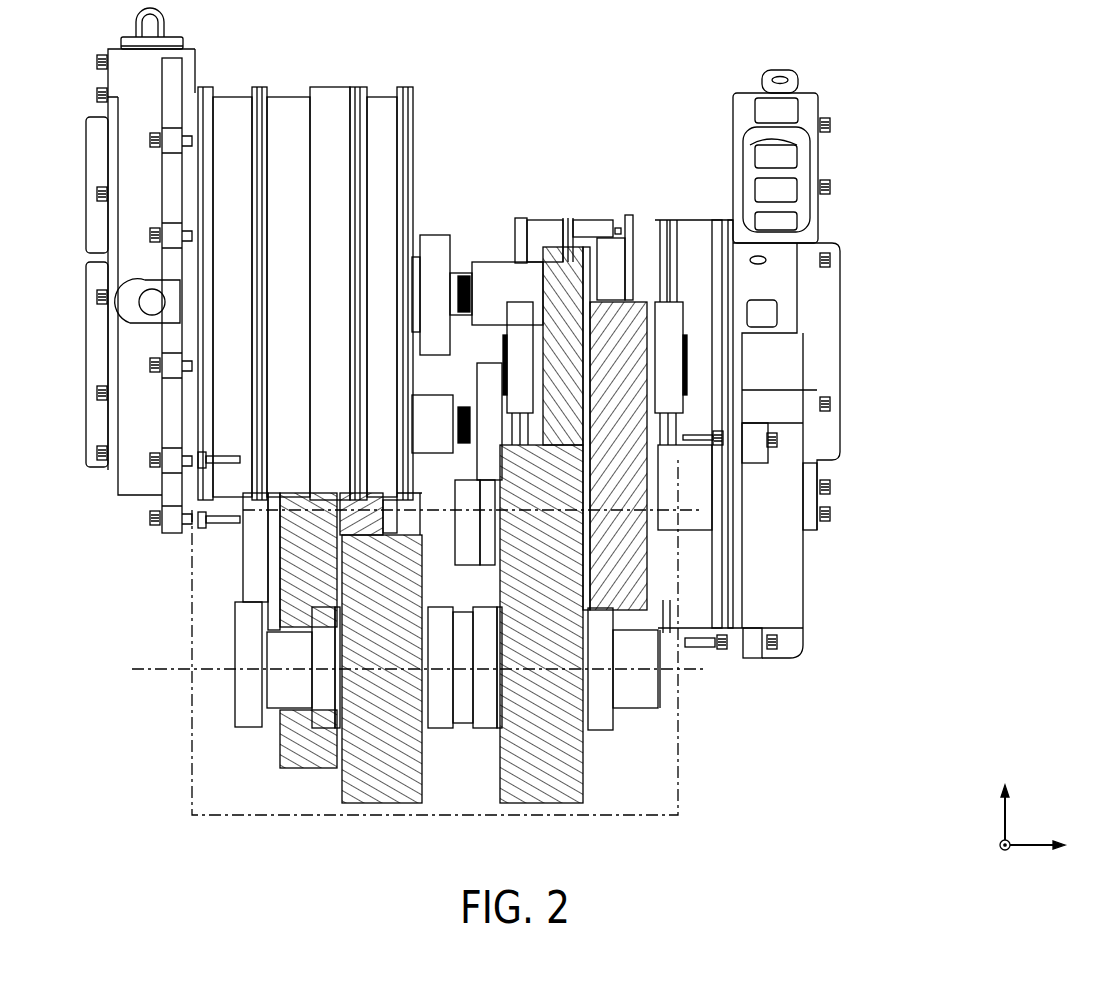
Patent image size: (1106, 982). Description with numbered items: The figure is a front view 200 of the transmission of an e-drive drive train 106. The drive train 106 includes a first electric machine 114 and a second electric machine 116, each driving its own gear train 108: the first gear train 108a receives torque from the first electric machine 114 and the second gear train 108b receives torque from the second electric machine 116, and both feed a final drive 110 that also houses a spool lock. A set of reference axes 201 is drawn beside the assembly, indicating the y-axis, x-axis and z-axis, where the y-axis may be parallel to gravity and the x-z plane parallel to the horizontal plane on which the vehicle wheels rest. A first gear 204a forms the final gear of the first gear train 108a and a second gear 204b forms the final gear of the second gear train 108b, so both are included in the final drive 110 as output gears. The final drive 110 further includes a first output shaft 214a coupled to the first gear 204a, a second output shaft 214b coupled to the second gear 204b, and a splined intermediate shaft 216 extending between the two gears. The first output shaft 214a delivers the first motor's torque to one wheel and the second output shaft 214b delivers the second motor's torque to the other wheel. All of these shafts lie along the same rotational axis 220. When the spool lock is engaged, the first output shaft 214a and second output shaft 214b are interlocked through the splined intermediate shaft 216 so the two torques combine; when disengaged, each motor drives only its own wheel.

The front view 200 is at (920, 117).
The reference axes 201 is at (1030, 811).
The drive train 106 is at (660, 97).
The gear train 108 is at (678, 803).
The first gear train 108a is at (633, 731).
The second gear train 108b is at (295, 778).
The final drive 110 is at (474, 661).
The first electric machine 114 is at (543, 218).
The second electric machine 116 is at (330, 87).
The first gear 204a is at (553, 803).
The second gear 204b is at (383, 803).
The first output shaft 214a is at (653, 708).
The second output shaft 214b is at (278, 720).
The splined intermediate shaft 216 is at (487, 730).
The rotational axis 220 is at (150, 668).